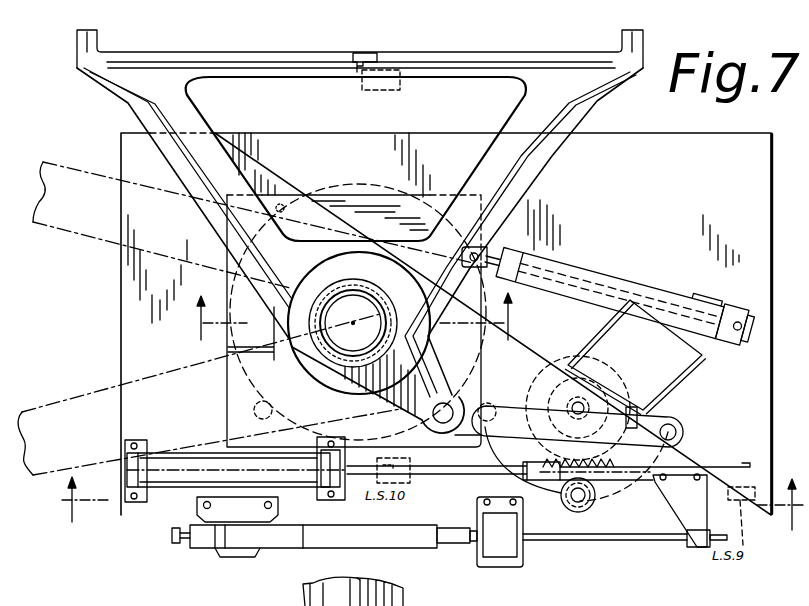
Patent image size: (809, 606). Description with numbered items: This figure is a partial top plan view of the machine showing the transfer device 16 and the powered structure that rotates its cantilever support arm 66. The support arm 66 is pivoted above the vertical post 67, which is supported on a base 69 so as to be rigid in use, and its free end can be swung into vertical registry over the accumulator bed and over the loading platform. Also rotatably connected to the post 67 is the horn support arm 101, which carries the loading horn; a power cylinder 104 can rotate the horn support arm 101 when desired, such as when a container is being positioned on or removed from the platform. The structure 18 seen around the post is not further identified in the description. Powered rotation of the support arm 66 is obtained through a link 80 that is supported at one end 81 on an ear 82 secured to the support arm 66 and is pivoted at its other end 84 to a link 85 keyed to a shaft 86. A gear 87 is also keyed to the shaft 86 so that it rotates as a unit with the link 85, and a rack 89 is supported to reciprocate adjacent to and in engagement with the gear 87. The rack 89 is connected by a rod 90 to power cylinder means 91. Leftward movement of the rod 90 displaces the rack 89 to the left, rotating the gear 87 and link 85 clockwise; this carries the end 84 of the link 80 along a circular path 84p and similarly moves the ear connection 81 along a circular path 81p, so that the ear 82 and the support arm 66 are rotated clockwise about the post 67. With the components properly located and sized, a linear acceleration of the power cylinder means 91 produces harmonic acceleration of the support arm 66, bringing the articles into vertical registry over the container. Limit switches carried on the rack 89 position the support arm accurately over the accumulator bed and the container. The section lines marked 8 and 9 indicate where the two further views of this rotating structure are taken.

The frame 18 is at (122, 109).
The base 69 is at (628, 152).
The horn support arm 101 is at (523, 103).
The vertical post 67 is at (335, 280).
The cantilever support arm 66 is at (93, 228).
The power cylinder 104 is at (638, 282).
The link 85 is at (673, 398).
The gear 87 is at (572, 360).
The shaft 86 is at (584, 400).
The link 80 is at (513, 402).
The other end of link 84 is at (683, 432).
The circular path 84p is at (602, 500).
The ear connection 81 is at (487, 408).
The circular path 81p is at (295, 432).
The ear 82 is at (410, 407).
The rack 89 is at (650, 478).
The rod 90 is at (467, 472).
The power cylinder means 91 is at (188, 458).
The transfer device 16 is at (301, 595).
The section line 9- 9 is at (349, 316).
The section line 8- 8 is at (430, 517).